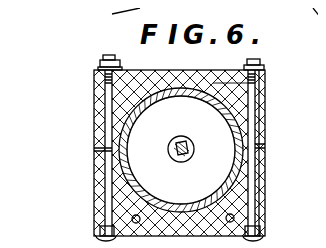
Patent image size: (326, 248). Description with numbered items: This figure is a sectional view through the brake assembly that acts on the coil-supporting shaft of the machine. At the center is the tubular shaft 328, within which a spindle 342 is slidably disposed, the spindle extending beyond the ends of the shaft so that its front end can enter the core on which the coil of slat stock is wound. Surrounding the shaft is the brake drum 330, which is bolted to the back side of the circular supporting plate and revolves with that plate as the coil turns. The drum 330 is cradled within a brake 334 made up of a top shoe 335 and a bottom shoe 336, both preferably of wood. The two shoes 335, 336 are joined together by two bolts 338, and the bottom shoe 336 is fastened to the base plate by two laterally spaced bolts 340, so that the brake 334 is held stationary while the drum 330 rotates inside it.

The tubular shaft 328 is at (182, 118).
The brake drum 330 is at (221, 113).
The brake 334 is at (84, 72).
The top shoe 335 is at (220, 81).
The bottom shoe 336 is at (230, 191).
The bolts 338 is at (245, 157).
The bolts 340 is at (124, 211).
The spindle 342 is at (165, 153).